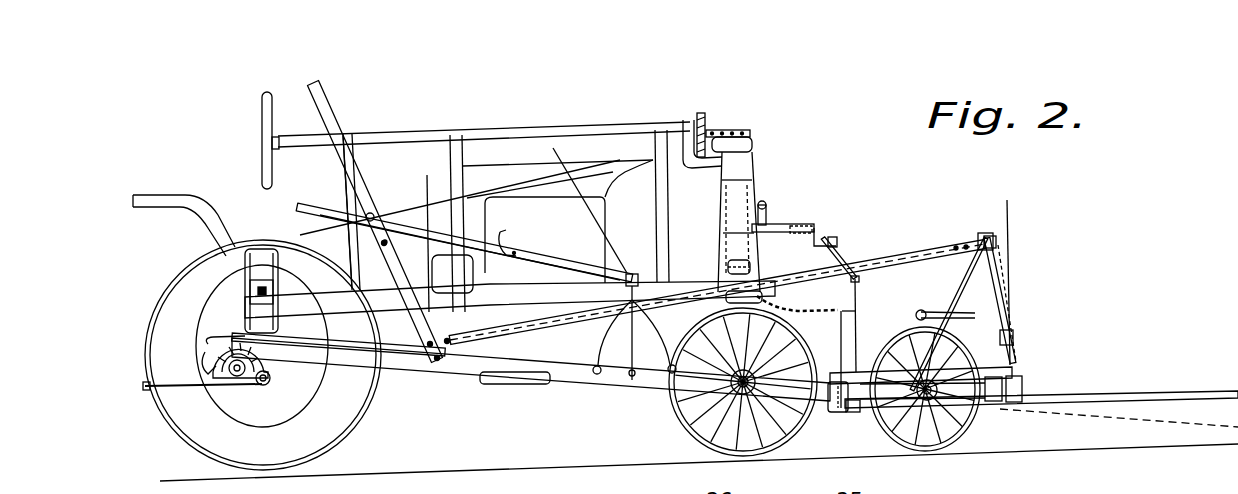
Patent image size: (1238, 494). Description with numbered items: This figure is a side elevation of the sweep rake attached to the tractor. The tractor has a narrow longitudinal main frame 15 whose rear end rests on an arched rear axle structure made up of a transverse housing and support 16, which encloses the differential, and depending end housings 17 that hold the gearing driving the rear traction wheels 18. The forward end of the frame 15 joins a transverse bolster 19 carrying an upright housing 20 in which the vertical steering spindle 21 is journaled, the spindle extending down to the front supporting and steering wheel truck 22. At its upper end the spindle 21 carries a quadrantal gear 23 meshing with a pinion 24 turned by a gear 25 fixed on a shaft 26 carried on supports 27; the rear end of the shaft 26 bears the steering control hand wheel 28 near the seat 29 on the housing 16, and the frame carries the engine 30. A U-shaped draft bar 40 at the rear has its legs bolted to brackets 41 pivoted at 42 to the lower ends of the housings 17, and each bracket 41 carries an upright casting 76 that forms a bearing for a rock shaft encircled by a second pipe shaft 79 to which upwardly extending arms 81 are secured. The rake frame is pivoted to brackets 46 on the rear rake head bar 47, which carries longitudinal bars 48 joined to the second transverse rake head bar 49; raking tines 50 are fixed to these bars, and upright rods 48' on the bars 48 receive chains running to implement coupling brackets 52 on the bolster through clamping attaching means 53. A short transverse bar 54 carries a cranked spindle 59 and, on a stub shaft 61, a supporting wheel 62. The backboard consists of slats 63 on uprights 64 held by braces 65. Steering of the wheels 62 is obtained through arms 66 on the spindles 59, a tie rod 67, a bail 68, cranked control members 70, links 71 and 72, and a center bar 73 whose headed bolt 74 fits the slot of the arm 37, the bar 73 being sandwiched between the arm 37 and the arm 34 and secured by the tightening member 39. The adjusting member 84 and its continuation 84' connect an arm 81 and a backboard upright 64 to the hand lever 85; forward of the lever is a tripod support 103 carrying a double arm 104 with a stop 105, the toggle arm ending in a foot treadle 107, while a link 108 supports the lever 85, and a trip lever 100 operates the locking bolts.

The main frame 15 is at (472, 374).
The transverse housing and support 16 is at (258, 280).
The depending end housings 17 is at (222, 296).
The rear traction wheels 18 is at (346, 443).
The transverse bolster 19 is at (732, 238).
The upright housing 20 is at (745, 189).
The vertical steering spindle 21 is at (753, 146).
The front tractor supporting and steering wheel truck 22 is at (677, 412).
The quadrantal gear 23 is at (747, 132).
The pinion 24 is at (716, 131).
The gear 25 is at (703, 113).
The shaft 26 is at (579, 130).
The supports 27 is at (343, 178).
The steering control hand wheel 28 is at (262, 118).
The seat 29 is at (160, 196).
The engine 30 is at (605, 210).
The arm 34 is at (776, 226).
The second arm 37 is at (830, 237).
The tightening member 39 is at (766, 210).
The U-shaped draft bar 40 is at (187, 387).
The bracket 41 is at (236, 378).
The pivotal connection 42 is at (268, 385).
The brackets 46 is at (830, 413).
The rear rake head bar 47 is at (853, 412).
The longitudinally extending bar 48 is at (956, 360).
The upright rod 48' is at (872, 324).
The second transverse rake head bar 49 is at (1023, 393).
The raking tines 50 is at (1152, 393).
The implement coupling brackets 52 is at (742, 261).
The clamping attaching means 53 is at (752, 267).
The transverse bar 54 is at (790, 308).
The cranked spindle 59 is at (918, 311).
The stub shaft 61 is at (1020, 409).
The supporting wheel 62 is at (978, 415).
The slats 63 is at (1000, 298).
The uprights 64 is at (1008, 255).
The braces 65 is at (983, 240).
The arms 66 is at (949, 312).
The tie rod 67 is at (1013, 338).
The bail 68 is at (1000, 242).
The cranked control member 70 is at (856, 328).
The links 71 is at (987, 232).
The links 72 is at (845, 263).
The center bar 73 is at (792, 228).
The headed bolt 74 is at (823, 226).
The upright casting 76 is at (205, 348).
The second pipe shaft 79 is at (218, 382).
The upwardly extending arms 81 is at (213, 338).
The adjusting member 84 is at (341, 376).
The continuation of adjusting member 84' is at (717, 272).
The hand lever 85 is at (362, 187).
The trip lever 100 is at (376, 218).
The tripod support 103 is at (650, 340).
The double arm 104 is at (551, 262).
The stop 105 is at (502, 240).
The foot engaging treadle 107 is at (297, 208).
The link 108 is at (378, 262).